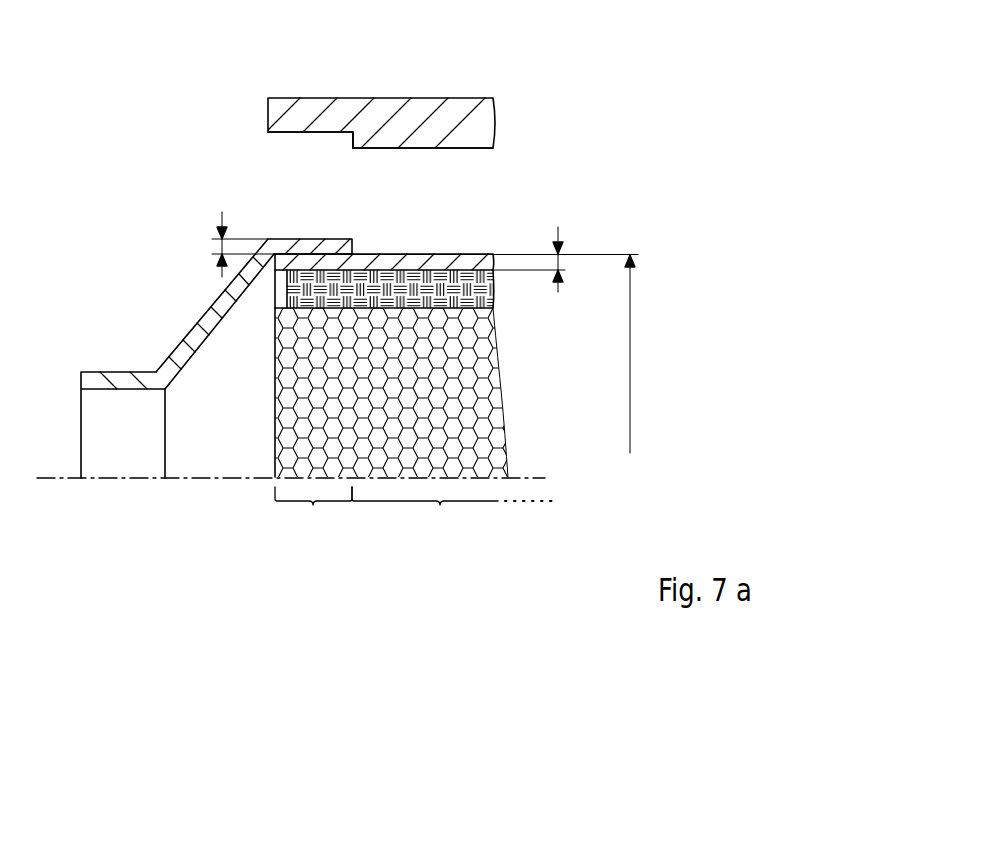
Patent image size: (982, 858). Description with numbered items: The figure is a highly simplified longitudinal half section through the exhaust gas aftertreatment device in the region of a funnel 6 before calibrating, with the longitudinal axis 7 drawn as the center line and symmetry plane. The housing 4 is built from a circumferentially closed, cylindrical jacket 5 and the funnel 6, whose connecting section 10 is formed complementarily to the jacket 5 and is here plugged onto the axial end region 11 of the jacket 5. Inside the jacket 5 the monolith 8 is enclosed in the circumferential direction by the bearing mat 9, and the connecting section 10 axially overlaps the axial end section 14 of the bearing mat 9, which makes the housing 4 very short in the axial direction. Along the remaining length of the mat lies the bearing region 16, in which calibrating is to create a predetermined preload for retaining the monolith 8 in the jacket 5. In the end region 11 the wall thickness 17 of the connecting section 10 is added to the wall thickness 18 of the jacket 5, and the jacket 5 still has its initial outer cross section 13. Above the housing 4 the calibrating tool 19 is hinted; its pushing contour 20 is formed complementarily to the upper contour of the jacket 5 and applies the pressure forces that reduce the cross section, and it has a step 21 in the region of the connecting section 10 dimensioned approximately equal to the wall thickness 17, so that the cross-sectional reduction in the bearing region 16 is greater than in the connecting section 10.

The housing 4 is at (198, 290).
The jacket 5 is at (485, 240).
The funnel 6 is at (108, 350).
The longitudinal axis 7 is at (210, 479).
The monolith 8 is at (490, 397).
The bearing mat 9 is at (495, 288).
The connecting section 10 is at (329, 248).
The axial end region 11 is at (302, 263).
The initial outer cross section 13 is at (630, 353).
The axial end section 14 is at (313, 505).
The bearing region 16 is at (440, 505).
The wall thickness of the connecting section 17 is at (212, 239).
The wall thickness of the jacket 18 is at (560, 261).
The calibrating tool 19 is at (480, 85).
The pushing contour 20 is at (403, 149).
The step 21 is at (317, 132).